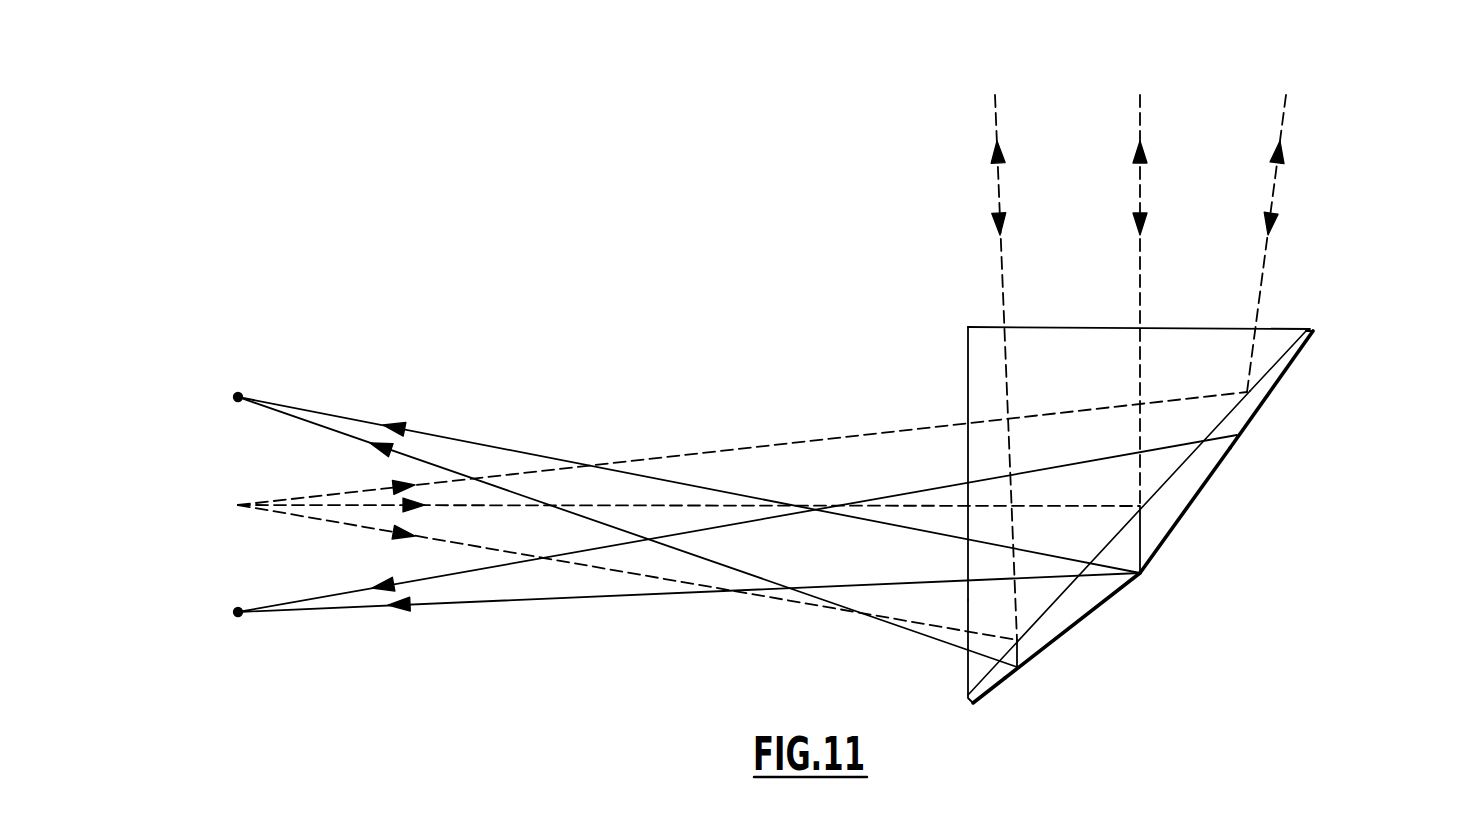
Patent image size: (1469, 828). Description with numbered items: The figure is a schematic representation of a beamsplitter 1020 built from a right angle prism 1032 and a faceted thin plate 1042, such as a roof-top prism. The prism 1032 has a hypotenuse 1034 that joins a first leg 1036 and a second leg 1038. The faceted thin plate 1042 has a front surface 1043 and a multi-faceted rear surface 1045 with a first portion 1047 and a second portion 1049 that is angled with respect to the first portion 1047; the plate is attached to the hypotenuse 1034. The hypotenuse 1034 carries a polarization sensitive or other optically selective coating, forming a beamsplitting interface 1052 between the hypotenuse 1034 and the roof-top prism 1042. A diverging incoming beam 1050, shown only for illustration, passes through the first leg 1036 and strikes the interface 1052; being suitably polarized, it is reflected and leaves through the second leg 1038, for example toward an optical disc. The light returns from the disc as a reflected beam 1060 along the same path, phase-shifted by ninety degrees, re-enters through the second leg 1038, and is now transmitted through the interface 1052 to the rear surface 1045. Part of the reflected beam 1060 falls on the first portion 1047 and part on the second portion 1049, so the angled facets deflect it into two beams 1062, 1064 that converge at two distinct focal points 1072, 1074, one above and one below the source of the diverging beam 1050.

The beamsplitter 1020 is at (1136, 509).
The right angle prism 1032 is at (942, 356).
The hypotenuse 1034 is at (1285, 350).
The first leg 1036 is at (966, 670).
The second leg 1038 is at (1048, 325).
The faceted thin plate 1042 is at (1334, 330).
The front surface 1043 is at (1158, 488).
The multi-faceted rear surface 1045 is at (1007, 700).
The first portion 1047 is at (1115, 595).
The second portion 1049 is at (1230, 452).
The diverging incoming beam 1050 is at (405, 538).
The beamsplitting interface 1052 is at (1057, 632).
The reflected beam 1060 is at (1140, 207).
The return beam 1062 is at (393, 607).
The return beam 1064 is at (396, 426).
The focal point 1072 is at (237, 614).
The focal point 1074 is at (237, 395).